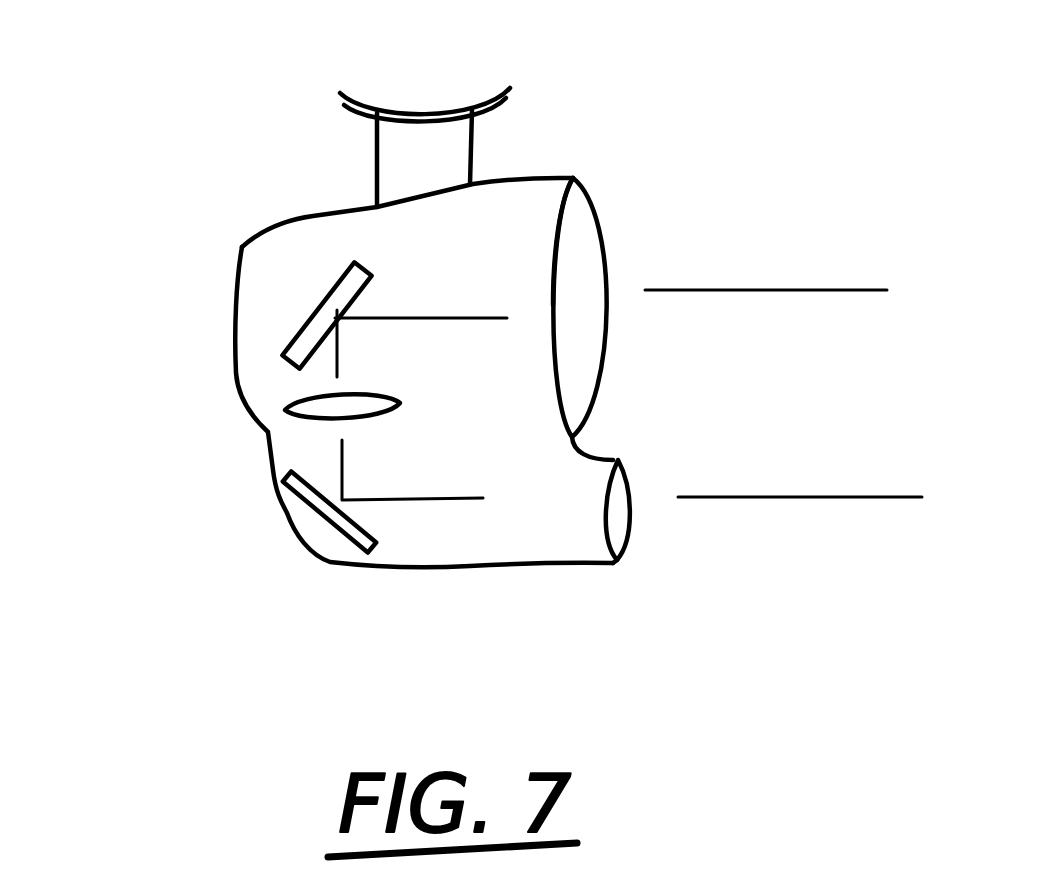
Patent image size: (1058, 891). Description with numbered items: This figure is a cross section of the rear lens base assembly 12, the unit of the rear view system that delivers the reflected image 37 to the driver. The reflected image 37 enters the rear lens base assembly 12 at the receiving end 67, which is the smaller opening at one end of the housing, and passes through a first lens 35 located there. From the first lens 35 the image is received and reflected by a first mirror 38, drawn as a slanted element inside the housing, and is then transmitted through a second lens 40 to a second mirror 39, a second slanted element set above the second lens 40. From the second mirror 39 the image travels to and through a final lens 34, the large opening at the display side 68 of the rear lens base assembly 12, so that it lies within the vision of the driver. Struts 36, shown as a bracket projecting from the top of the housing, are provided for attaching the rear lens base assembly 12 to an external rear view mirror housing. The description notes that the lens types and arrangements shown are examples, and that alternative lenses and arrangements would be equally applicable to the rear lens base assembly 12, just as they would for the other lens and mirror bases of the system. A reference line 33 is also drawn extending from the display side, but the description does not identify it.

The rear lens base assembly 12 is at (302, 222).
The struts 36 is at (362, 161).
The display side 68 is at (594, 173).
The final lens 34 is at (597, 217).
The first axis 33 is at (771, 288).
The first lens 35 is at (628, 485).
The reflected image 37 is at (812, 490).
The receiving end 67 is at (648, 553).
The second mirror 39 is at (313, 303).
The second lens 40 is at (300, 395).
The first mirror 38 is at (300, 503).